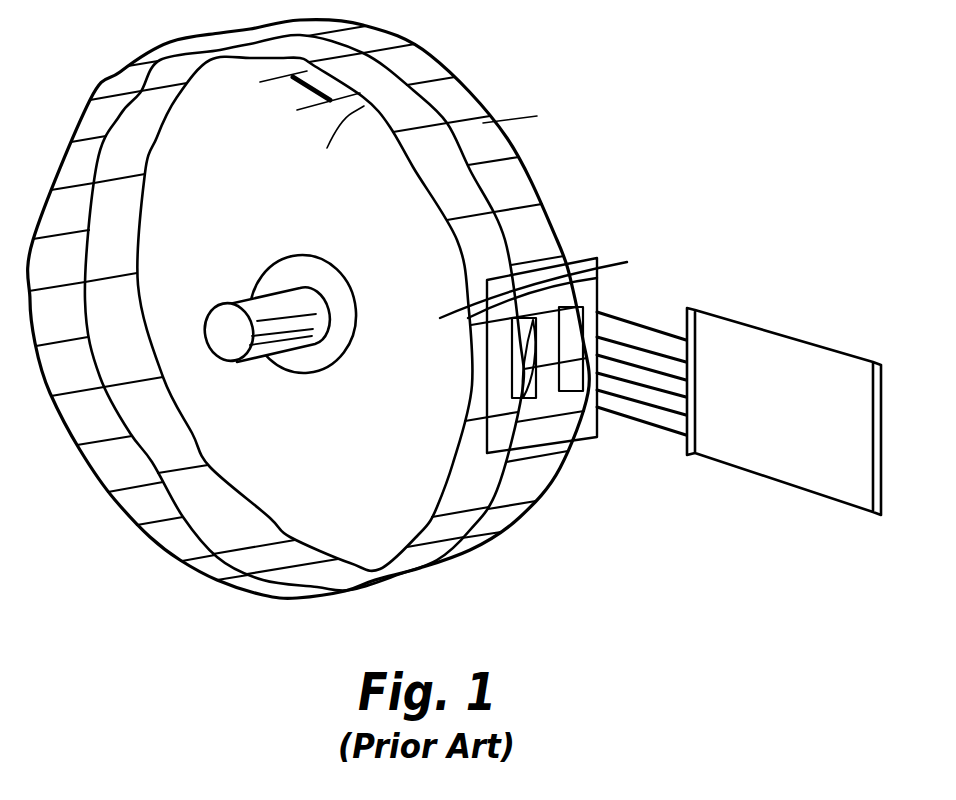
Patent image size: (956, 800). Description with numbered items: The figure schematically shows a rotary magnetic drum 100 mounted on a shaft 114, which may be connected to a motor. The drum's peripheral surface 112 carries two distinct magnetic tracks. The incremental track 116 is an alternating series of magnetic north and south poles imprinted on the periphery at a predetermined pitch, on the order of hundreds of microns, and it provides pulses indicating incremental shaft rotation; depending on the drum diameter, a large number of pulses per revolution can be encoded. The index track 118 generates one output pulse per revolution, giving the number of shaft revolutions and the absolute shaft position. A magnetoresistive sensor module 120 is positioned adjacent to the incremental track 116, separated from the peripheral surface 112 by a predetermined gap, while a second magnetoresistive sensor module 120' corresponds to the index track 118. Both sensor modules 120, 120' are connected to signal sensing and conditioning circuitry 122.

The magnetic drum 100 is at (574, 192).
The peripheral surface 112 is at (520, 479).
The shaft 114 is at (256, 308).
The INC track 116 is at (286, 60).
The Z track 118 is at (473, 103).
The magnetoresistive sensor module 120 is at (519, 355).
The magnetoresistive sensor module 120' is at (609, 335).
The signal sensing and conditioning circuitry 122 is at (807, 432).